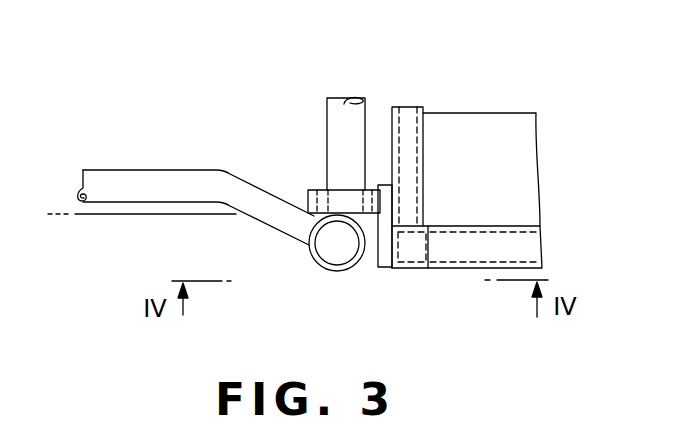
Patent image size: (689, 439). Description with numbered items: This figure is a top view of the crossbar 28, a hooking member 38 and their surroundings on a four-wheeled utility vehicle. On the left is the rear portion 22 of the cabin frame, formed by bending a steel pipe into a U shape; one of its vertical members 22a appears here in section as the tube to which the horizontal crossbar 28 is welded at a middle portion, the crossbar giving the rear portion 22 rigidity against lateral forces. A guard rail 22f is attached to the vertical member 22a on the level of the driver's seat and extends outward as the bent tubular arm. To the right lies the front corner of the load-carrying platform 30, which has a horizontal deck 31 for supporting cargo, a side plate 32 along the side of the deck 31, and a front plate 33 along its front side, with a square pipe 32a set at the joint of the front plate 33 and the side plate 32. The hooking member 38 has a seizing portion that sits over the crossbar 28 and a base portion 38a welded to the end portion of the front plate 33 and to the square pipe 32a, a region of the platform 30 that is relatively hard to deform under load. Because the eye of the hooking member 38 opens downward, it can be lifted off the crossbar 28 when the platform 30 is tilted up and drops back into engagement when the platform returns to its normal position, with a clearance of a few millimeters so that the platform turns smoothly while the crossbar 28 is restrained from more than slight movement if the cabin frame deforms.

The rear portion of the cabin frame 22 is at (209, 211).
The vertical member 22a is at (330, 250).
The guard rail 22f is at (145, 178).
The crossbar 28 is at (328, 122).
The hooking member 38 is at (313, 195).
The base portion 38a is at (380, 256).
The load-carrying platform 30 is at (427, 62).
The deck 31 is at (483, 133).
The side plate 32 is at (532, 247).
The square pipe 32a is at (412, 252).
The front plate 33 is at (407, 137).